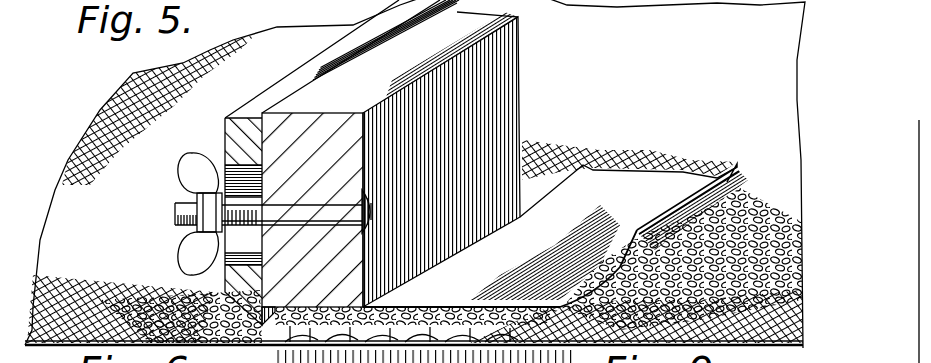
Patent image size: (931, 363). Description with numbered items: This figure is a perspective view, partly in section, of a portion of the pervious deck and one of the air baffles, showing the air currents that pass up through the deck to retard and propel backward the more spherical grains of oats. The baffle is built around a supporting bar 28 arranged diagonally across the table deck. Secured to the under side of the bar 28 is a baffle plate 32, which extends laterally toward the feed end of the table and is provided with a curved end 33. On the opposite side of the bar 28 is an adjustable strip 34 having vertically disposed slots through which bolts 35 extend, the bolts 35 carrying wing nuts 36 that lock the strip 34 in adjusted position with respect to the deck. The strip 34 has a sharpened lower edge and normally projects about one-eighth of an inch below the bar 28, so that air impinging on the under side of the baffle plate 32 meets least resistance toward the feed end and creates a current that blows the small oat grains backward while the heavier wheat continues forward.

The supporting bar 28 is at (392, 162).
The baffle plate 32 is at (550, 236).
The curved end 33 is at (692, 207).
The strip 34 is at (385, 40).
The bolt 35 is at (273, 211).
The wing nut 36 is at (175, 214).